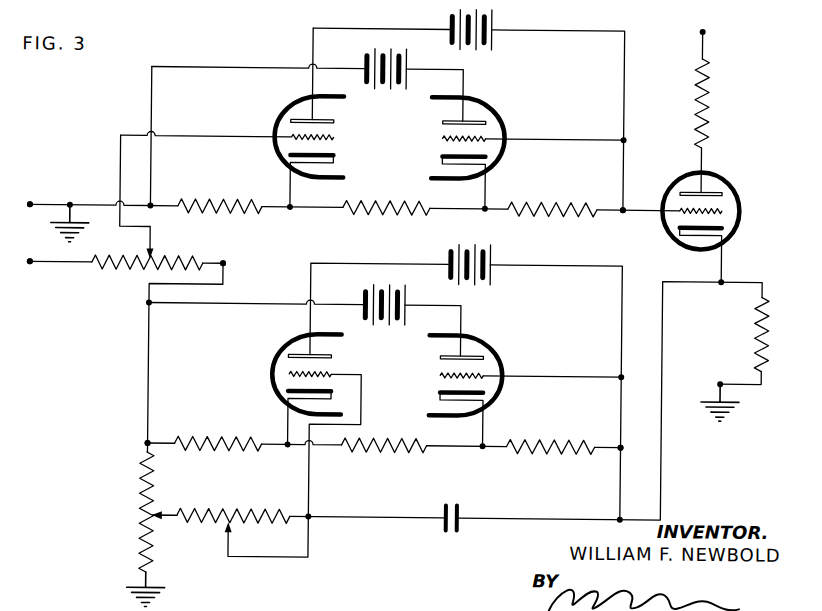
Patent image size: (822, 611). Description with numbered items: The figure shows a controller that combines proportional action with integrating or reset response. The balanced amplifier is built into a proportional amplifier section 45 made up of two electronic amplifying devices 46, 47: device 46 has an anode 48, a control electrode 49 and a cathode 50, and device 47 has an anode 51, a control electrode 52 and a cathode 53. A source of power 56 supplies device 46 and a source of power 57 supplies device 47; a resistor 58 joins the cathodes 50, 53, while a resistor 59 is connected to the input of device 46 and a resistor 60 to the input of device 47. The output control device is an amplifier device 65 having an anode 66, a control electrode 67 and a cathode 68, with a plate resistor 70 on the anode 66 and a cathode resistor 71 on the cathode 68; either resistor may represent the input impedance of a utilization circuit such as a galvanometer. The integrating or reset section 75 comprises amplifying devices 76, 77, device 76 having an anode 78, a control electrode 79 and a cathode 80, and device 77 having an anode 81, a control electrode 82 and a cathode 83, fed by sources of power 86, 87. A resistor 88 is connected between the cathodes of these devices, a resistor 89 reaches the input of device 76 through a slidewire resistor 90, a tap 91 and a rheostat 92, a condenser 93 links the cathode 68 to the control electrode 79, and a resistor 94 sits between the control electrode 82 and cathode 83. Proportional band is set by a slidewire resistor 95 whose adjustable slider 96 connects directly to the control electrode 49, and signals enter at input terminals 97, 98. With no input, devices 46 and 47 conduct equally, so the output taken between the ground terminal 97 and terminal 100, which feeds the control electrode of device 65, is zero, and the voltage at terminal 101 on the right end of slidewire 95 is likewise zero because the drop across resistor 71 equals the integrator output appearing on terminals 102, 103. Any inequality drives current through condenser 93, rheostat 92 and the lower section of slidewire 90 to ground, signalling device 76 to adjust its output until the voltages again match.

The proportional amplifier section 45 is at (387, 148).
The electronic amplifying device 46 is at (283, 109).
The electronic amplifying device 47 is at (503, 114).
The anode 48 is at (336, 122).
The control electrode 49 is at (334, 138).
The cathode 50 is at (336, 156).
The anode 51 is at (443, 121).
The control electrode 52 is at (443, 138).
The cathode 53 is at (438, 156).
The source of power 56 is at (474, 11).
The source of power 57 is at (390, 50).
The resistor 58 is at (392, 204).
The resistor 59 is at (221, 202).
The resistor 60 is at (556, 202).
The amplifier device 65 is at (712, 216).
The anode 66 is at (722, 188).
The control electrode 67 is at (721, 209).
The cathode 68 is at (727, 221).
The plate resistor 70 is at (704, 104).
The cathode resistor 71 is at (767, 330).
The integrating or reset section 75 is at (427, 384).
The amplifying device 76 is at (279, 349).
The amplifying device 77 is at (493, 346).
The anode 78 is at (331, 356).
The control electrode 79 is at (333, 374).
The cathode 80 is at (291, 390).
The anode 81 is at (445, 356).
The control electrode 82 is at (445, 378).
The cathode 83 is at (449, 398).
The source of power 86 is at (472, 251).
The source of power 87 is at (380, 290).
The resistor 88 is at (384, 450).
The resistor 89 is at (213, 434).
The slidewire resistor 90 is at (142, 506).
The tap 91 is at (157, 514).
The rheostat 92 is at (230, 506).
The condenser 93 is at (458, 534).
The resistor 94 is at (561, 435).
The slidewire resistor 95 is at (128, 276).
The adjustable slider 96 is at (152, 256).
The input terminal 97 is at (30, 205).
The input terminal 98 is at (30, 263).
The terminal 100 is at (622, 212).
The terminal 101 is at (224, 265).
The terminal 102 is at (624, 449).
The terminal 103 is at (146, 442).